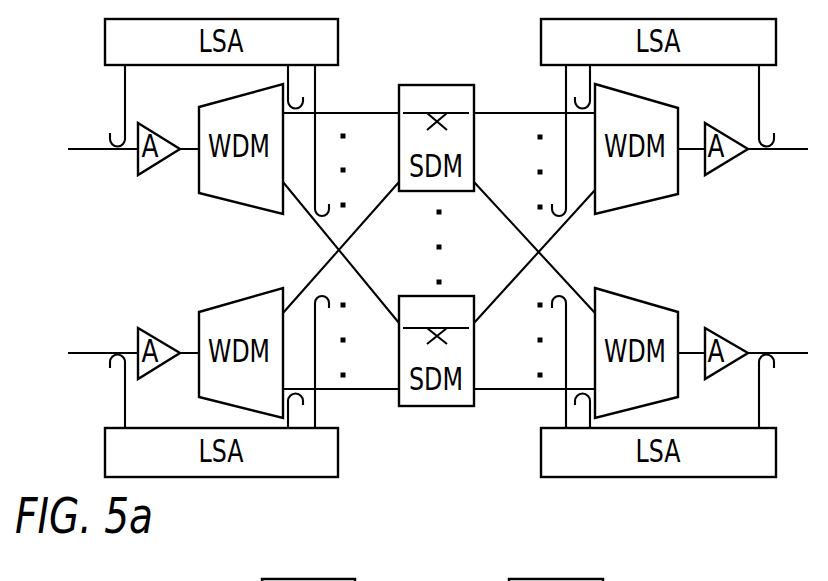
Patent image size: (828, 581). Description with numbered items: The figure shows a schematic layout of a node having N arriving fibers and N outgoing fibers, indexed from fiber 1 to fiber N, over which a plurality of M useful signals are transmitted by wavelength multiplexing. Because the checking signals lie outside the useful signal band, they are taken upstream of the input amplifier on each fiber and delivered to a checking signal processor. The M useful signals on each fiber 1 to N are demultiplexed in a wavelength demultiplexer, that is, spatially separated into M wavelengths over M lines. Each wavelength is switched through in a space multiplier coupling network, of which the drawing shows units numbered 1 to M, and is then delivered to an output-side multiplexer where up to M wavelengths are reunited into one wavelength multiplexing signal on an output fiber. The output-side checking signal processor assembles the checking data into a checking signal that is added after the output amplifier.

The fiber 1 is at (439, 138).
The plurality of useful signals M is at (436, 351).
The arriving fibers and outgoing fibers N is at (438, 344).